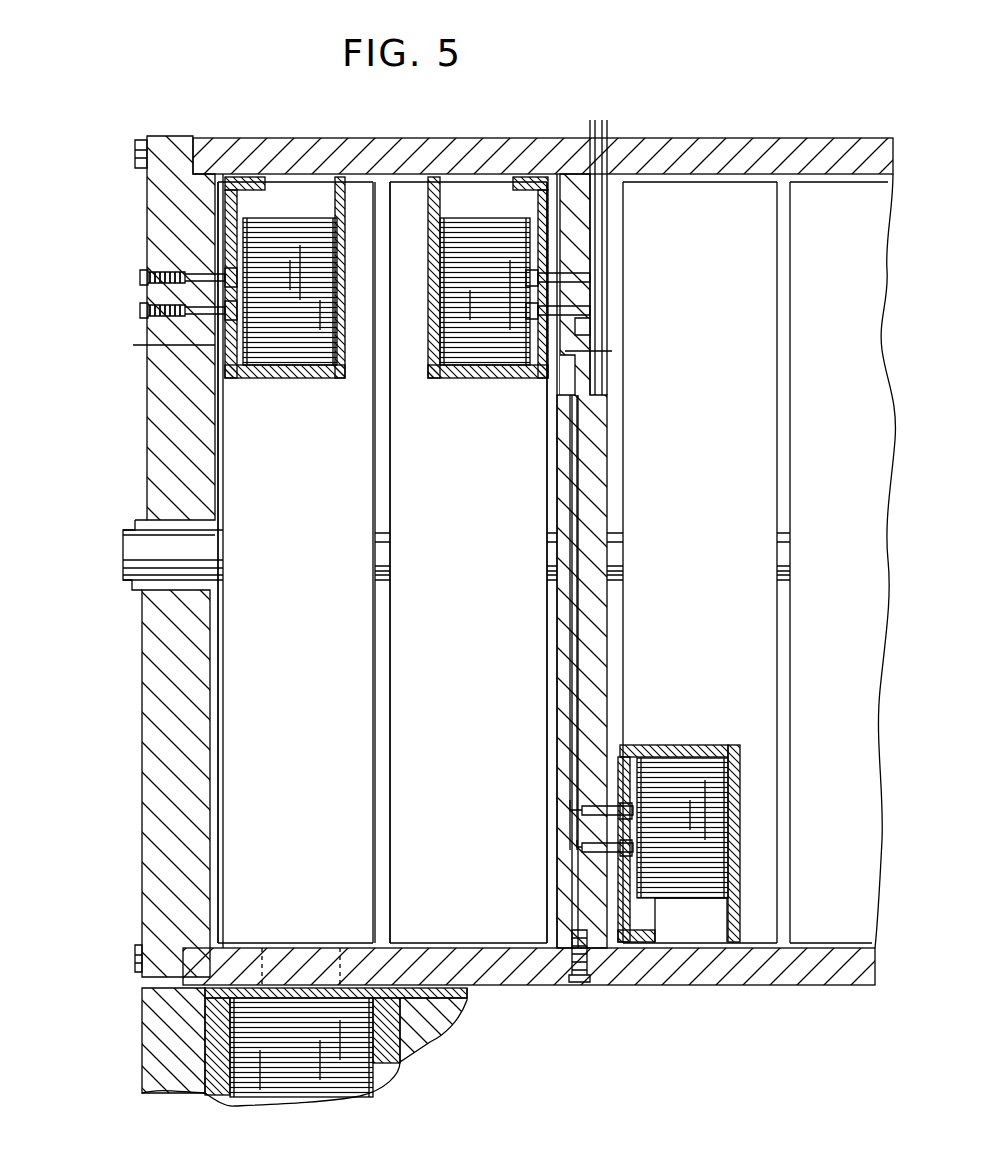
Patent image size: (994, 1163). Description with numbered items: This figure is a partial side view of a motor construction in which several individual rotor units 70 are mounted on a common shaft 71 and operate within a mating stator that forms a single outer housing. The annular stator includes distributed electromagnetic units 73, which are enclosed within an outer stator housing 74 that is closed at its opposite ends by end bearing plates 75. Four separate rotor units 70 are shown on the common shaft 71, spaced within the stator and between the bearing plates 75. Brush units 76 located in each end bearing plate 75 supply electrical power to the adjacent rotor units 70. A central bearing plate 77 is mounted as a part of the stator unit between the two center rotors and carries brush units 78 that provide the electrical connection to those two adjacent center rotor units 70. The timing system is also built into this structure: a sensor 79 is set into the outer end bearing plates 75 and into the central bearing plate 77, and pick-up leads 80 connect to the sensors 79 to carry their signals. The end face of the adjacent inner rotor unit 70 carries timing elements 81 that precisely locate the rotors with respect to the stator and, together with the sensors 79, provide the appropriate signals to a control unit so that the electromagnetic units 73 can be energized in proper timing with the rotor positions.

The rotor unit 70 is at (313, 541).
The common shaft 71 is at (548, 558).
The electromagnetic unit 73 is at (316, 378).
The outer stator housing 74 is at (138, 957).
The end bearing plate 75 is at (150, 452).
The brush unit 76 is at (203, 318).
The central bearing plate 77 is at (600, 456).
The brush unit 78 is at (590, 333).
The sensor 79 is at (212, 362).
The pick-up lead 80 is at (138, 348).
The timing element 81 is at (227, 376).